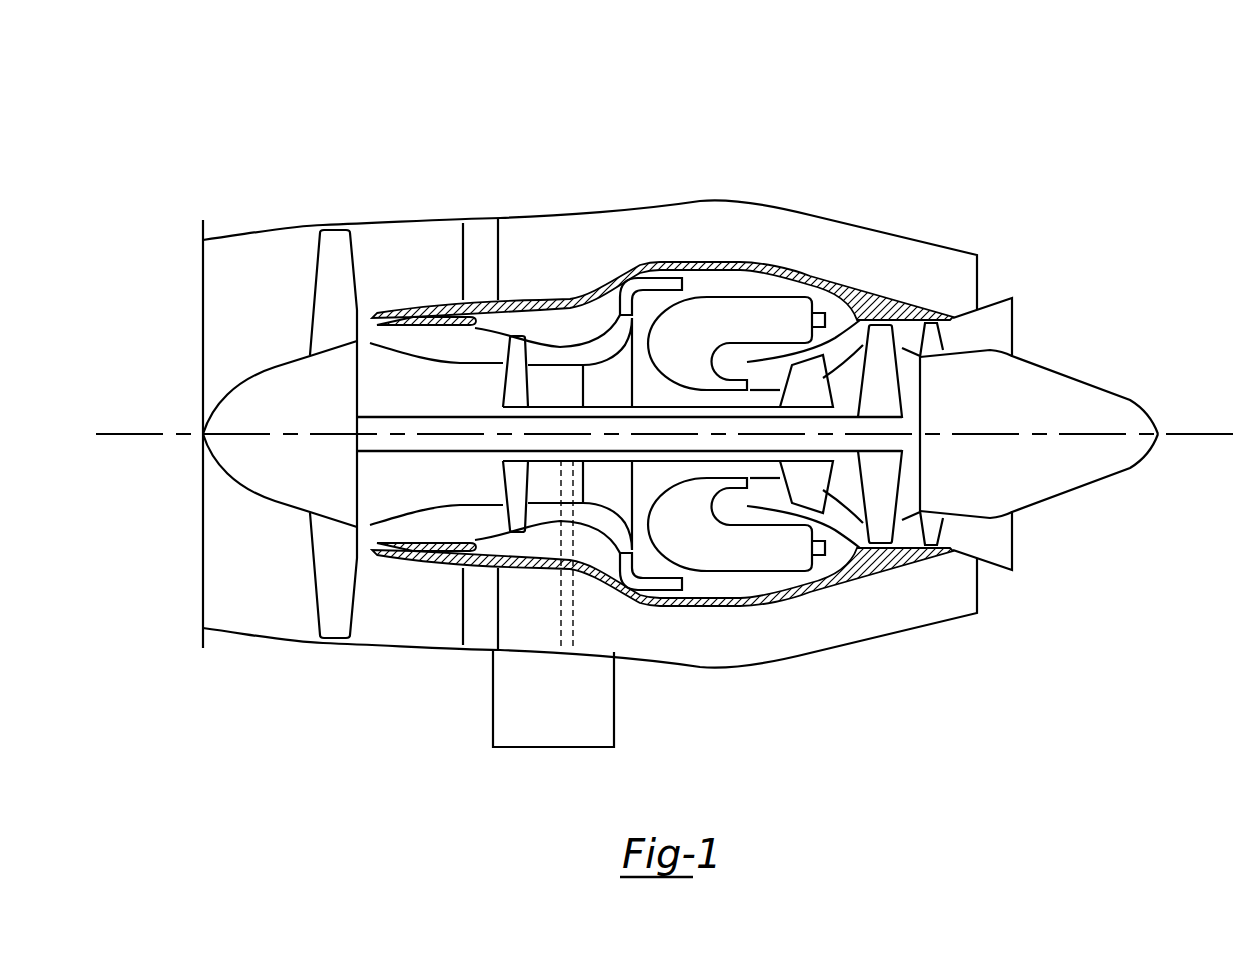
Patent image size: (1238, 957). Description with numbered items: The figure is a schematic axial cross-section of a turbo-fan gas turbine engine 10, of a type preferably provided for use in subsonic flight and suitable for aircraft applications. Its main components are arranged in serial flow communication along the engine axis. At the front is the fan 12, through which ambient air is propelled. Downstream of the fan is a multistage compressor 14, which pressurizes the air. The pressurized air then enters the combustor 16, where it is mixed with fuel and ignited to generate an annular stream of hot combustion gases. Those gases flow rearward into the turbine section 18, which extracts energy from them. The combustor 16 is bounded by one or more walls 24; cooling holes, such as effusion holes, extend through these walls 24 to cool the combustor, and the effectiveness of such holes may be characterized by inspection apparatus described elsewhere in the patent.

The gas turbine engine 10 is at (860, 163).
The fan 12 is at (328, 565).
The multistage compressor 14 is at (567, 357).
The combustor 16 is at (733, 312).
The turbine section 18 is at (845, 490).
The wall 24 is at (767, 293).